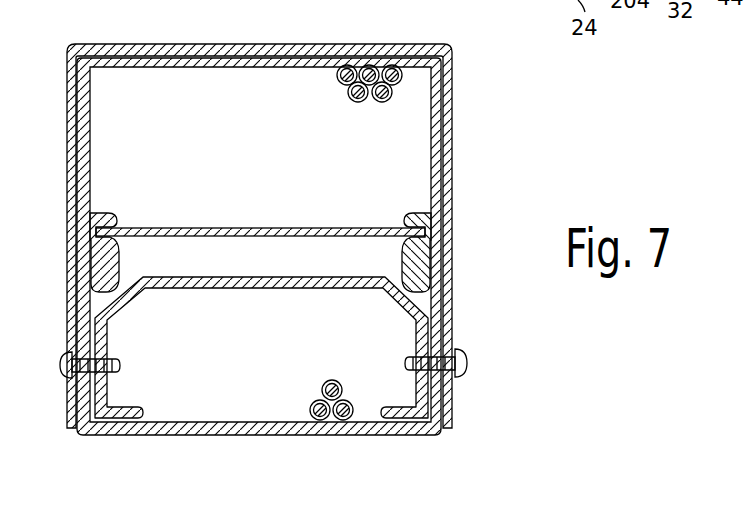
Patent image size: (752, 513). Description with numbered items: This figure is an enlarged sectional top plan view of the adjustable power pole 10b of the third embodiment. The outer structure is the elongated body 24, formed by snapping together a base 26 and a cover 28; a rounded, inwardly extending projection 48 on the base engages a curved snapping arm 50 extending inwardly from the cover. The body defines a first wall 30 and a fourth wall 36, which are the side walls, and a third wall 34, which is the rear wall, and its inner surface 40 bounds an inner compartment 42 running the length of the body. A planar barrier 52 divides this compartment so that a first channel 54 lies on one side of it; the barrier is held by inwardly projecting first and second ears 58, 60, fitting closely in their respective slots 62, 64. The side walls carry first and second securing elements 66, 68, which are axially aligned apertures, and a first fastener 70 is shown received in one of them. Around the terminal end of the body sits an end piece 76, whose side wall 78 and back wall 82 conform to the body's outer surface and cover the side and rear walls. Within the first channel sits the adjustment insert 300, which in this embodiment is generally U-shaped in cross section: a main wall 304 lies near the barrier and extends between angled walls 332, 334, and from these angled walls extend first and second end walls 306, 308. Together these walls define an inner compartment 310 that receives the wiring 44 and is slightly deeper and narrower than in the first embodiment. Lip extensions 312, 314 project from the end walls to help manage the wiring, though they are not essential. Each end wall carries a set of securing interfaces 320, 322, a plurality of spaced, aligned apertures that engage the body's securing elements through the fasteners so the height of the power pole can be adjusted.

The power pole 10b is at (528, 108).
The elongated body 24 is at (250, 50).
The base 26 is at (440, 428).
The cover 28 is at (100, 140).
The first wall 30 is at (431, 146).
The third wall 34 is at (236, 70).
The fourth wall 36 is at (90, 96).
The inner surface 40 is at (422, 100).
The inner compartment 42 is at (421, 197).
The wiring 44 is at (337, 80).
The projection 48 is at (114, 282).
The snapping arm 50 is at (118, 246).
The barrier 52 is at (206, 228).
The first channel 54 is at (431, 113).
The first ear 58 is at (408, 216).
The second ear 60 is at (106, 214).
The slot 62 is at (404, 226).
The slot 64 is at (112, 224).
The first securing element 66 is at (460, 352).
The second securing element 68 is at (104, 346).
The first fastener 70 is at (467, 366).
The end piece 76 is at (465, 147).
The side wall 78 is at (453, 168).
The back wall 82 is at (426, 44).
The adjustment insert 300 is at (256, 320).
The main wall 304 is at (241, 277).
The first end wall 306 is at (398, 333).
The second end wall 308 is at (106, 397).
The inner compartment 310 is at (293, 298).
The lip extension 312 is at (400, 408).
The lip extension 314 is at (142, 412).
The first set of securing interfaces 320 is at (405, 365).
The second set of securing interfaces 322 is at (124, 365).
The angled wall 332 is at (442, 302).
The angled wall 334 is at (128, 312).